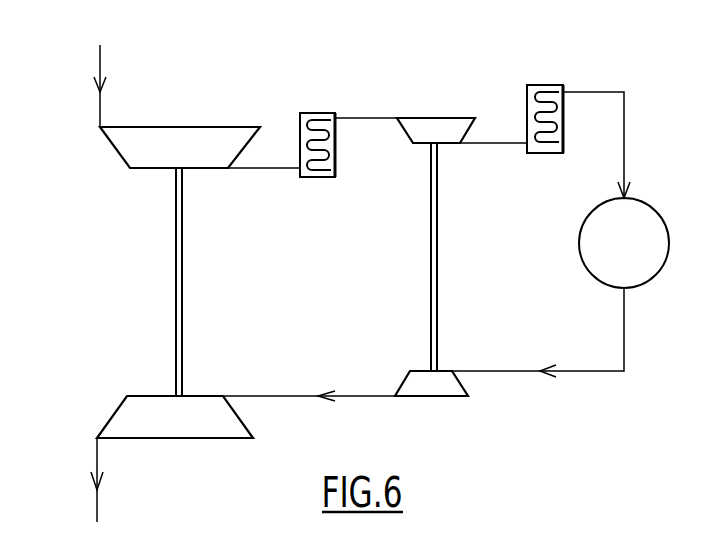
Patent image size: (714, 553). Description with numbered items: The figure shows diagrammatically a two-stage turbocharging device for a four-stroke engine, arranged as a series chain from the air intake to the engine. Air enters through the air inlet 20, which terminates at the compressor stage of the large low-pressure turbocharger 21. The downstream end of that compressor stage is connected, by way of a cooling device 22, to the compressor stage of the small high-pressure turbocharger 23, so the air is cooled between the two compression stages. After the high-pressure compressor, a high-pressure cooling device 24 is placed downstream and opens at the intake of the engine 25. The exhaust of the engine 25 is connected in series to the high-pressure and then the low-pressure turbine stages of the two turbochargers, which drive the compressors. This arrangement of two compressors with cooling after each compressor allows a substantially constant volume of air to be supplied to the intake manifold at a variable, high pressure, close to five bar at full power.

The air inlet 20 is at (100, 108).
The low-pressure (BP) turbocharger 21 is at (152, 315).
The cooling device 22 is at (320, 113).
The high-pressure (HP) turbocharger 23 is at (411, 282).
The high-pressure cooling device 24 is at (548, 85).
The engine 25 is at (583, 222).